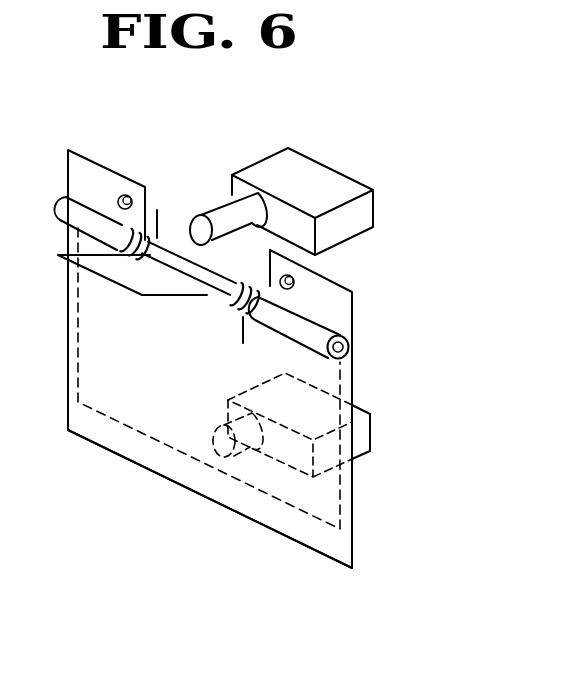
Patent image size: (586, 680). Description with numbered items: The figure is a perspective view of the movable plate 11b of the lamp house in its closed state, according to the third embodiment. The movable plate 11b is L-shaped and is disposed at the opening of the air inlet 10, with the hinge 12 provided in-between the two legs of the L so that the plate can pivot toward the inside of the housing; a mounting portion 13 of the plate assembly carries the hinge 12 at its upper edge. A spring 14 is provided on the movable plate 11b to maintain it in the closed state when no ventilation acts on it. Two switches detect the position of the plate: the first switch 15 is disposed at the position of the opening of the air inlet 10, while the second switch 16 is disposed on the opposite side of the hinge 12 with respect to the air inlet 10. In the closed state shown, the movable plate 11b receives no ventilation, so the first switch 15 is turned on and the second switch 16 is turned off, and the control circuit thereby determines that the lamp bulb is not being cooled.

The air inlet 10 is at (340, 495).
The movable plate 11b is at (182, 490).
The hinge 12 is at (318, 313).
The mounting hole in bracket 13 is at (123, 198).
The spring 14 is at (157, 212).
The first switch 15 is at (350, 412).
The second switch 16 is at (330, 171).